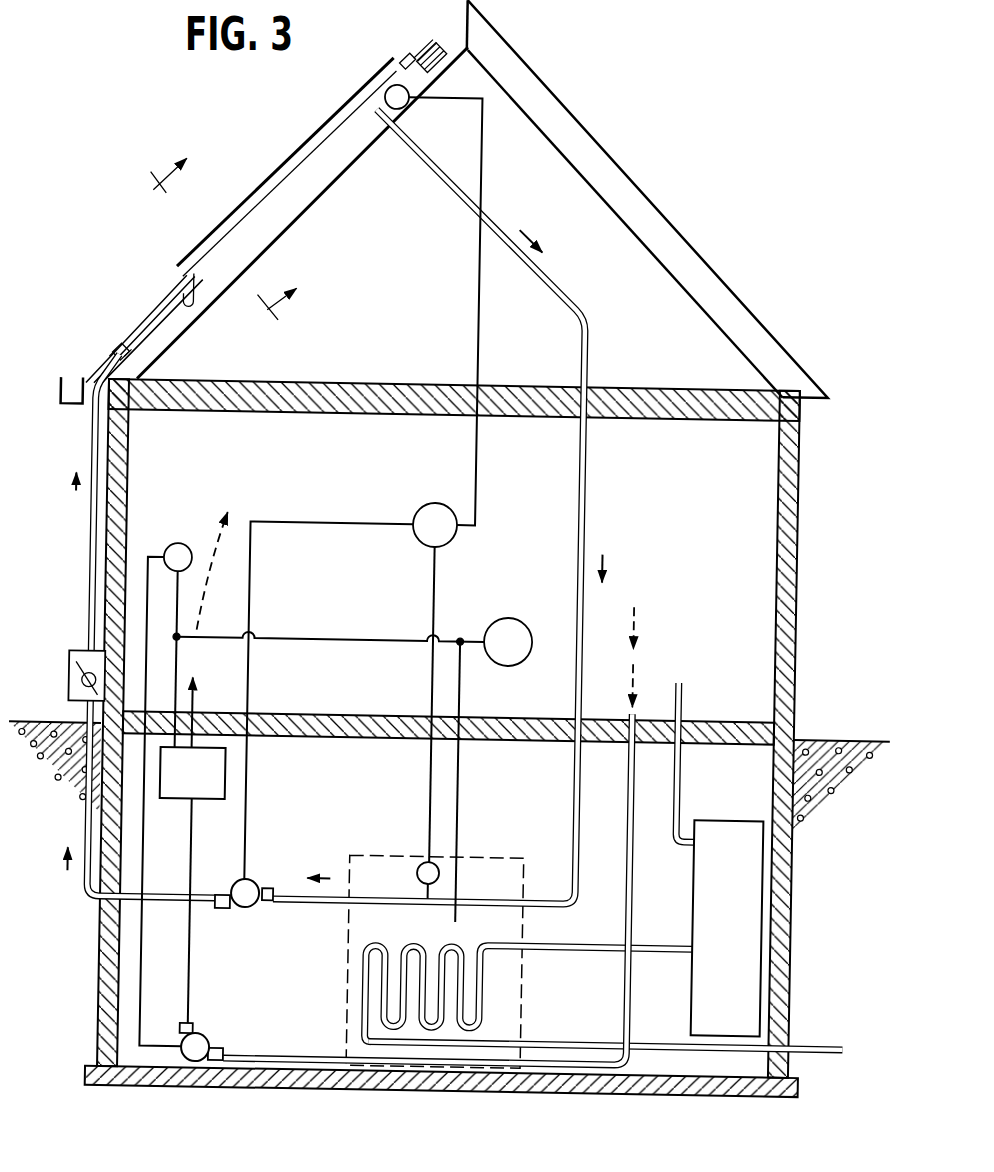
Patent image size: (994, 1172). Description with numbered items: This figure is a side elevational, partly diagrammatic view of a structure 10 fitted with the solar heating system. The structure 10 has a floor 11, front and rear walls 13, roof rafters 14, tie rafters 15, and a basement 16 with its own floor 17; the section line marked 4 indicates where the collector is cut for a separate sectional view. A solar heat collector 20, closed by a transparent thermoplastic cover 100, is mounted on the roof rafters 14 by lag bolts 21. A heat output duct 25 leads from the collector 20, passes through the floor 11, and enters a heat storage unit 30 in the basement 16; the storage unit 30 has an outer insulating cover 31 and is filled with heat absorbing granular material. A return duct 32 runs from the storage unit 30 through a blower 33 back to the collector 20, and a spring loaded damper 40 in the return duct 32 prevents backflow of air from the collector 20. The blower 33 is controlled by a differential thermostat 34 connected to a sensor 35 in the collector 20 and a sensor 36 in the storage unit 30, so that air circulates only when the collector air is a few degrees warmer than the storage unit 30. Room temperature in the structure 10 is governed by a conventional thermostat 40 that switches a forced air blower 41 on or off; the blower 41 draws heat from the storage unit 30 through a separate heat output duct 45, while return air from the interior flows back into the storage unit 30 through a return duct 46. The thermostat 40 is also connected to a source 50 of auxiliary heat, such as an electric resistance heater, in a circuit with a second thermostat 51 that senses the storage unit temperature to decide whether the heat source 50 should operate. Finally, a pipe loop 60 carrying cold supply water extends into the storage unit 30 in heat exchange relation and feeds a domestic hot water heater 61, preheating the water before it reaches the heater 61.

The section line of FIG. 4 is at (215, 247).
The structure 10 is at (597, 84).
The floor 11 is at (727, 712).
The front and rear walls 13 is at (118, 540).
The roof rafters 14 is at (662, 203).
The tie rafters 15 is at (638, 378).
The basement 16 is at (761, 759).
The basement floor 17 is at (315, 1085).
The solar heat collector 20 is at (252, 125).
The lag bolts 21 is at (410, 42).
The heat output duct 25 is at (590, 512).
The heat storage unit 30 is at (596, 929).
The outer insulating cover 31 is at (489, 848).
The return duct 32 is at (93, 590).
The blower 33 is at (266, 878).
The differential thermostat 34 is at (419, 490).
The sensor 35 is at (404, 104).
The sensor 36 is at (428, 857).
The thermostat 40 is at (182, 542).
The forced air blower 41 is at (221, 1030).
The heat output duct 45 is at (210, 955).
The return duct 46 is at (641, 878).
The source of auxiliary heat 50 is at (209, 783).
The second thermostat 51 is at (531, 650).
The pipe loop 60 is at (458, 981).
The domestic hot water heater 61 is at (707, 890).
The cover 100 is at (229, 205).